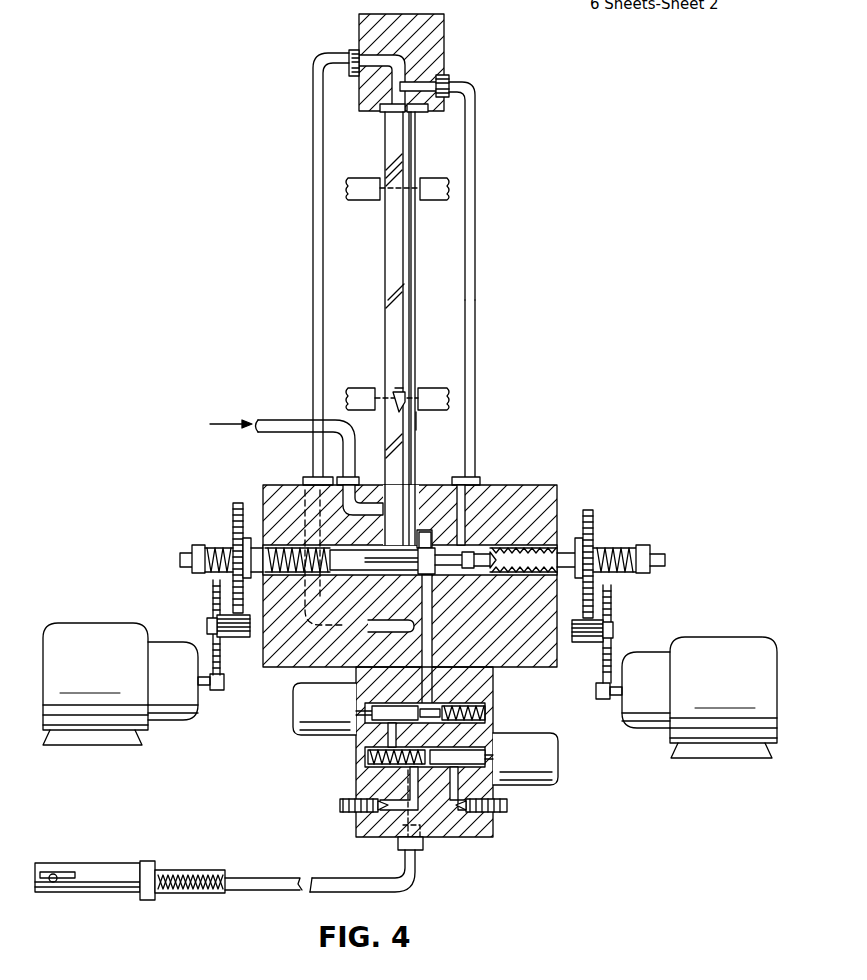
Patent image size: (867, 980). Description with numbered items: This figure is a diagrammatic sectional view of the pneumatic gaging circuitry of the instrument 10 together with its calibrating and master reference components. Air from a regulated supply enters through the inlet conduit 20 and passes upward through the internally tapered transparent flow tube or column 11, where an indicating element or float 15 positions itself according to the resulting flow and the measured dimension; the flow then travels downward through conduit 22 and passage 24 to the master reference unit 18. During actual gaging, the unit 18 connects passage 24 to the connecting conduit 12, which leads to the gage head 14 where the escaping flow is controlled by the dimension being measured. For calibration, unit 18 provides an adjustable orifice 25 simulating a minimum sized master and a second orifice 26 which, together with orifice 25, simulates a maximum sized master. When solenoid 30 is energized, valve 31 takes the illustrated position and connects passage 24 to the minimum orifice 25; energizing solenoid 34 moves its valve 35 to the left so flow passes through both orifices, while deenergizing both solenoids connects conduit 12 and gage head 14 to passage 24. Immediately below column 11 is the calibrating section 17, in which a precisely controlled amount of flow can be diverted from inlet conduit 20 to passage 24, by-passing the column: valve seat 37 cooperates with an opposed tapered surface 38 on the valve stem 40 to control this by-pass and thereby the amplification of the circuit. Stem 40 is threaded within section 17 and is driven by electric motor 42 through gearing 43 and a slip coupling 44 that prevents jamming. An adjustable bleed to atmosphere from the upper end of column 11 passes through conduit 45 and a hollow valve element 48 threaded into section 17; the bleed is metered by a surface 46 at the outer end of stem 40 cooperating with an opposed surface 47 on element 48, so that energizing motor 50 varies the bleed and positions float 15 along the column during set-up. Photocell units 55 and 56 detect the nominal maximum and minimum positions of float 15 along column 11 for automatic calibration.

The fluid supply conduit assembly 10 is at (452, 249).
The transparent flow tube 11 is at (382, 350).
The connecting conduit 12 is at (405, 880).
The gage head 14 is at (112, 868).
The float 15 is at (408, 382).
The calibrating section 17 is at (558, 493).
The master reference unit 18 is at (497, 717).
The inlet conduit 20 is at (282, 424).
The conduit 22 is at (312, 318).
The passage 24 is at (418, 643).
The adjustable orifice 25 is at (462, 818).
The second orifice 26 is at (378, 820).
The solenoid 30 is at (329, 718).
The valve 31 is at (388, 720).
The solenoid 34 is at (534, 767).
The valve 35 is at (470, 748).
The valve seat 37 is at (416, 544).
The tapered surface 38 is at (405, 575).
The valve stem 40 is at (367, 578).
The electric motor 42 is at (104, 689).
The gearing 43 is at (204, 603).
The slip coupling 44 is at (233, 528).
The conduit 45 is at (472, 406).
The surface 46 is at (473, 570).
The opposed surface 47 is at (480, 572).
The hollow valve element 48 is at (543, 550).
The motor 50 is at (729, 700).
The photocell unit 55 is at (420, 170).
The photocell unit 56 is at (423, 417).